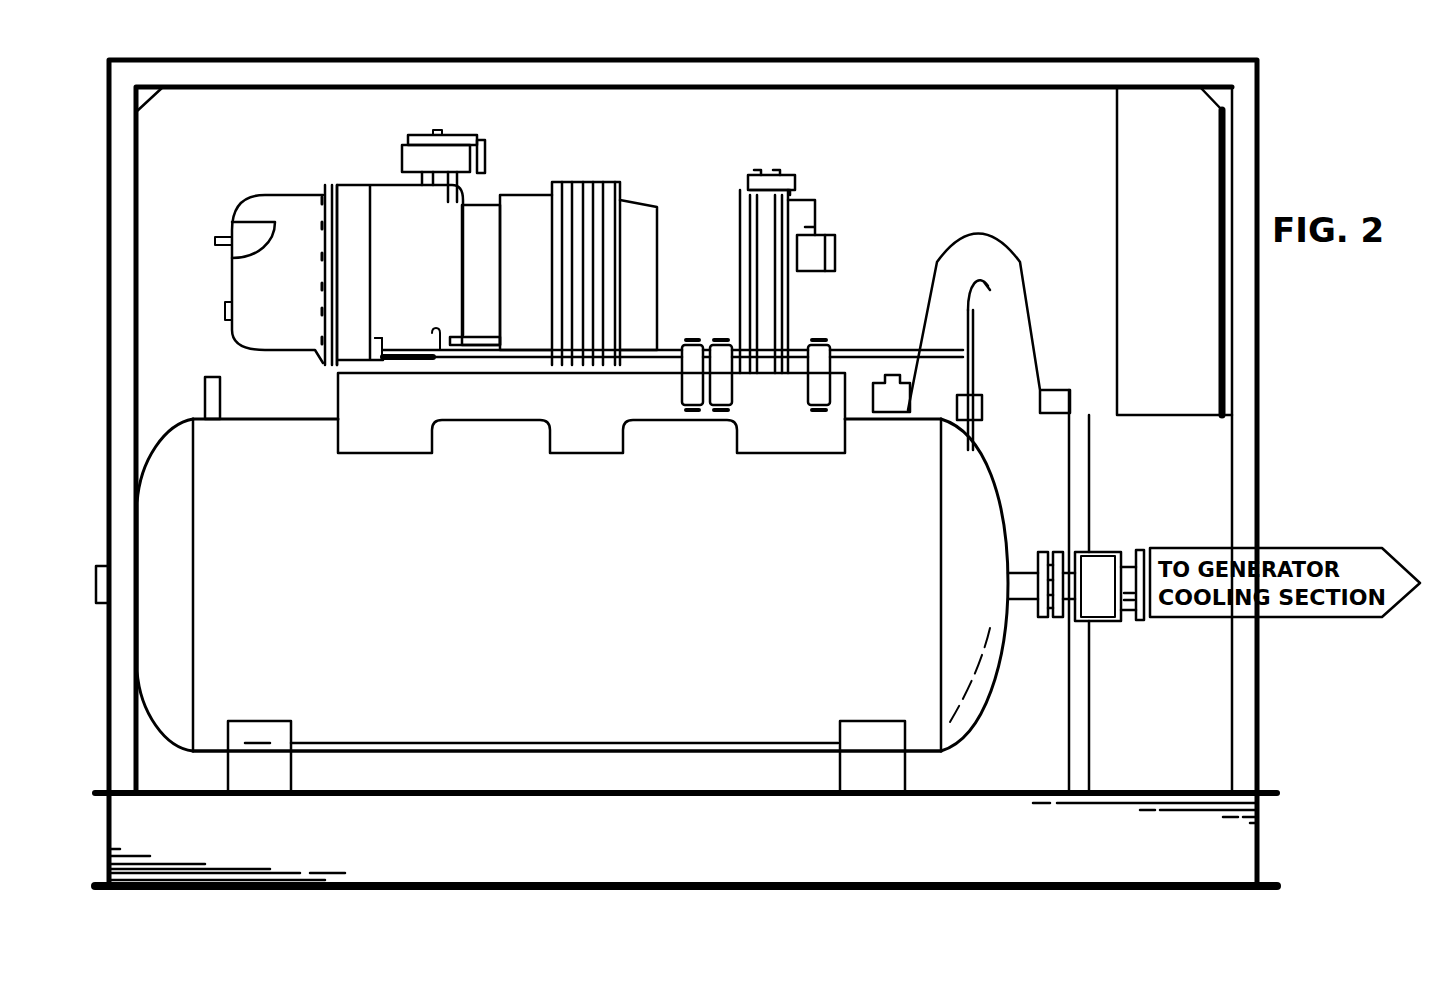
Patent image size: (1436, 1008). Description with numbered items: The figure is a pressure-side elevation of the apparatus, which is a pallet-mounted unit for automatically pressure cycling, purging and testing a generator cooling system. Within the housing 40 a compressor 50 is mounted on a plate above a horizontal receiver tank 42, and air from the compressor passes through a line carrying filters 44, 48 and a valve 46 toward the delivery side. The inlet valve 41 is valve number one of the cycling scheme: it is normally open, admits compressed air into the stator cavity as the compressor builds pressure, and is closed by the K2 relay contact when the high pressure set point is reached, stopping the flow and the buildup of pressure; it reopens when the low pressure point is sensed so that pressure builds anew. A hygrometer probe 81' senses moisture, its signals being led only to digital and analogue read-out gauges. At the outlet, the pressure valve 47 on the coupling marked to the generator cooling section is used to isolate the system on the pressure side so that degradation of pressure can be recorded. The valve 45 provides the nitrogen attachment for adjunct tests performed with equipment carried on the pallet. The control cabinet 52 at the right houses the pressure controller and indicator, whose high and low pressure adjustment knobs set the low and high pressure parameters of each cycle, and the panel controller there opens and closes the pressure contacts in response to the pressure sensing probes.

The compressor enclosure 40 is at (1276, 150).
The inlet valve 41 is at (984, 405).
The air receiver tank 42 is at (784, 613).
The air filter 44 is at (684, 378).
The valve 45 is at (383, 336).
The control valve 46 is at (796, 193).
The pressure valve 47 is at (1131, 630).
The filters 48 is at (808, 383).
The air compressor 50 is at (430, 242).
The control cabinet 52 is at (1177, 322).
The hygrometer probe 81' is at (971, 342).